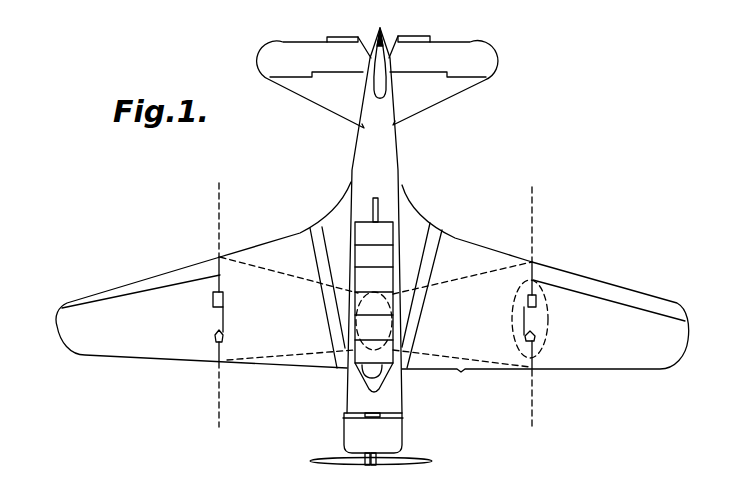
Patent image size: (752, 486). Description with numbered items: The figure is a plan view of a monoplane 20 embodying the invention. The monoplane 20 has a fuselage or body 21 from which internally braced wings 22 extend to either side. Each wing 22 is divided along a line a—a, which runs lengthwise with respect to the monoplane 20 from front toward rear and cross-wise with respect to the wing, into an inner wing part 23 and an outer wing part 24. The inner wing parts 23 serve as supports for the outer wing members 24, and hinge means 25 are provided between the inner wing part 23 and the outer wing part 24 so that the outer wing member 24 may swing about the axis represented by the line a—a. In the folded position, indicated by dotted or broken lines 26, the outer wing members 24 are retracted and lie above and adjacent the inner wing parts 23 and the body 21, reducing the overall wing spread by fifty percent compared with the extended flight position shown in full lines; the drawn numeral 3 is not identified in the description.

The fuselage 20 is at (398, 158).
The engine 21 is at (392, 398).
The wing 22 is at (257, 342).
The sight line 23 is at (488, 260).
The outer wing section 24 is at (607, 320).
The detector unit 25 is at (211, 326).
The connecting line 26 is at (465, 275).
The detection zone 3 is at (541, 288).